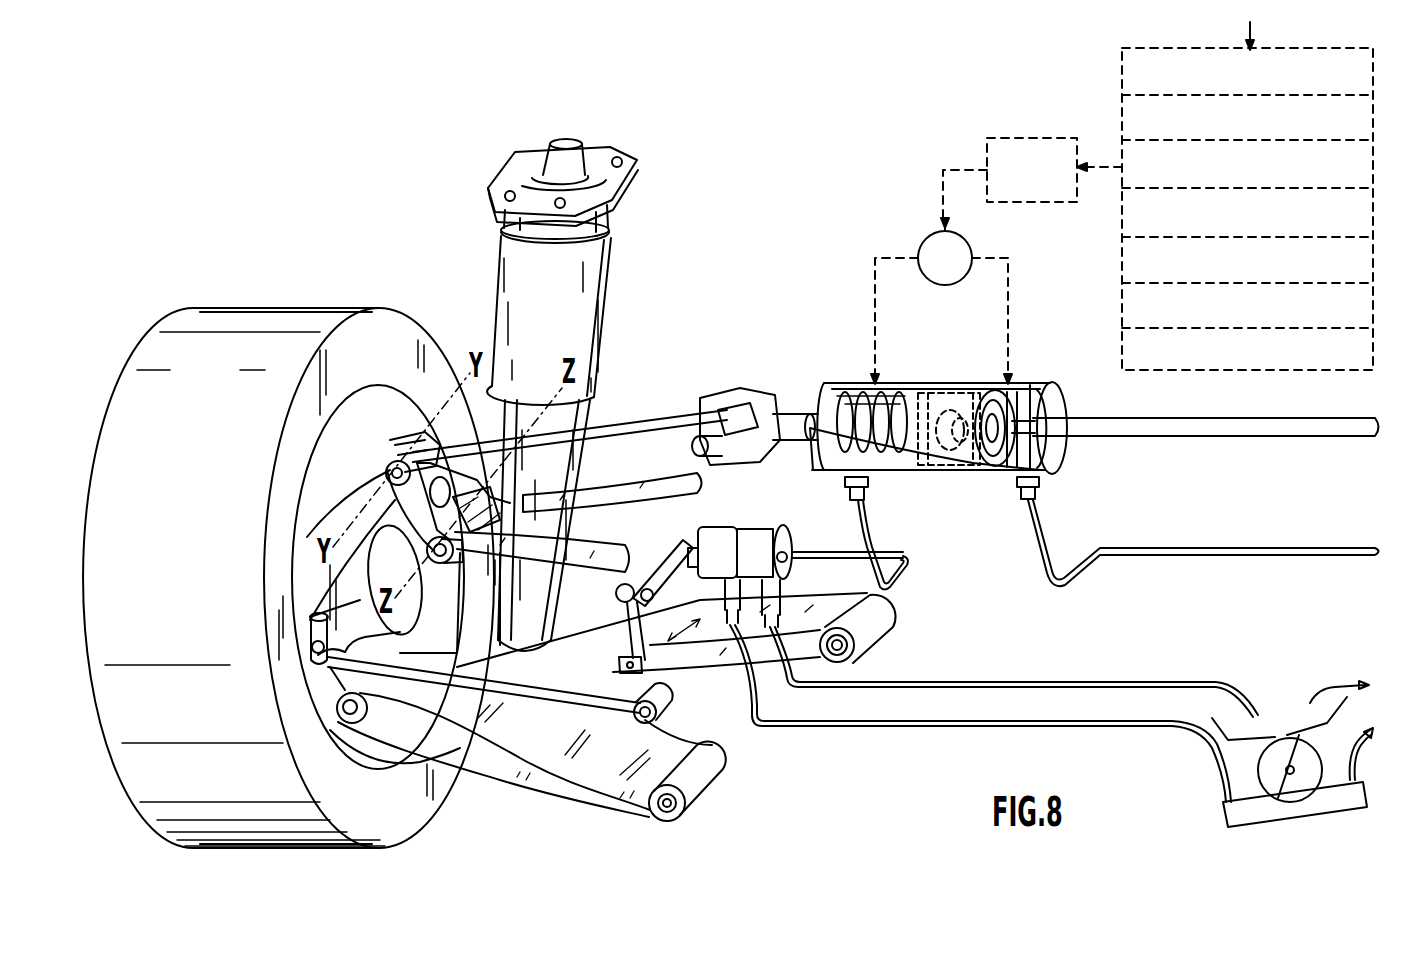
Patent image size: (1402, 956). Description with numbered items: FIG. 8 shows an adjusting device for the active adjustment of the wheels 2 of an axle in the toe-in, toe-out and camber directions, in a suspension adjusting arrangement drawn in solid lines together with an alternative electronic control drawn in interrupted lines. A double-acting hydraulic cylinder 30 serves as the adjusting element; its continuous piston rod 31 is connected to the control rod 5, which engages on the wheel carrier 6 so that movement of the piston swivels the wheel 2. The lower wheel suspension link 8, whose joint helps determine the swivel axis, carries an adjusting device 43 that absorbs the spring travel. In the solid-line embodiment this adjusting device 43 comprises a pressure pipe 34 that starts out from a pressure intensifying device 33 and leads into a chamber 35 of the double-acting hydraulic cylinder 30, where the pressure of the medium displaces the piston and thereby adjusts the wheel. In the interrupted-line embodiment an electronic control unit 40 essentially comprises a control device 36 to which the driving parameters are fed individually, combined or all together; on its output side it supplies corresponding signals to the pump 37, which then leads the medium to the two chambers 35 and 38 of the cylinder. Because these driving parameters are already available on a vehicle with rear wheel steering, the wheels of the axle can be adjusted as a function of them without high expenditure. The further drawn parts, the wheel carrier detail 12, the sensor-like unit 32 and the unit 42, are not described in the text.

The wheel 2 is at (250, 318).
The control rod 5 is at (657, 418).
The wheel carrier 6 is at (360, 527).
The lower wheel suspension link 8 is at (573, 757).
The wheel carrier 12 is at (480, 550).
The double-acting hydraulic cylinder 30 is at (966, 476).
The continuous piston rod 31 is at (1185, 432).
The sensor 32 is at (755, 519).
The pressure intensifying device 33 is at (787, 533).
The pressure pipe 34 is at (867, 522).
The chamber 35 is at (862, 383).
The control device 36 is at (1030, 150).
The pump 37 is at (920, 247).
The chamber 38 is at (1017, 381).
The electronic control unit 40 is at (942, 143).
The pressure reservoir unit 42 is at (1259, 769).
The adjusting device 43 is at (687, 604).